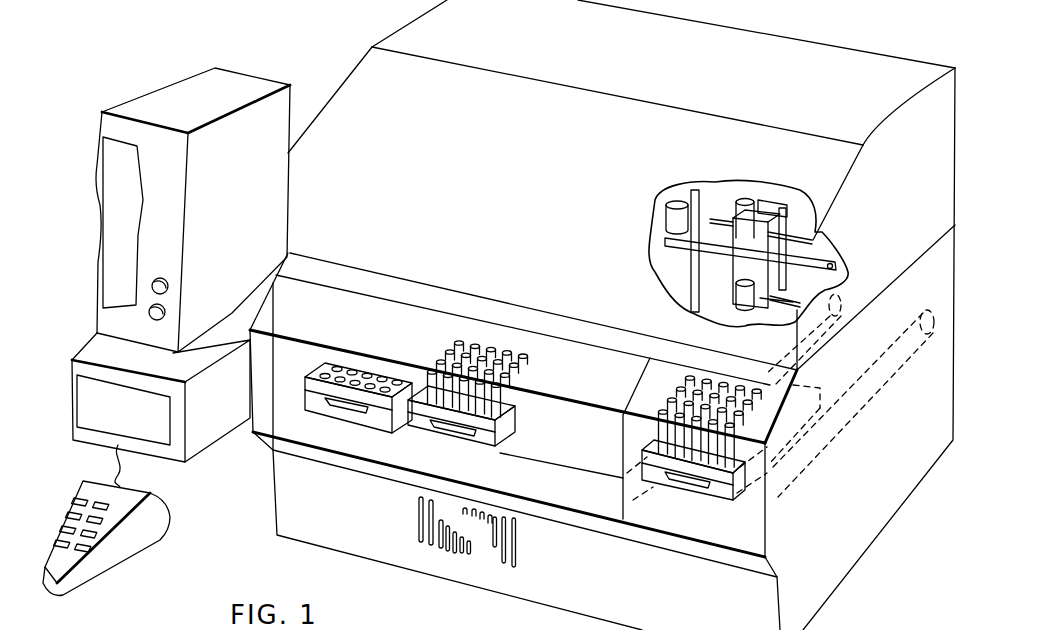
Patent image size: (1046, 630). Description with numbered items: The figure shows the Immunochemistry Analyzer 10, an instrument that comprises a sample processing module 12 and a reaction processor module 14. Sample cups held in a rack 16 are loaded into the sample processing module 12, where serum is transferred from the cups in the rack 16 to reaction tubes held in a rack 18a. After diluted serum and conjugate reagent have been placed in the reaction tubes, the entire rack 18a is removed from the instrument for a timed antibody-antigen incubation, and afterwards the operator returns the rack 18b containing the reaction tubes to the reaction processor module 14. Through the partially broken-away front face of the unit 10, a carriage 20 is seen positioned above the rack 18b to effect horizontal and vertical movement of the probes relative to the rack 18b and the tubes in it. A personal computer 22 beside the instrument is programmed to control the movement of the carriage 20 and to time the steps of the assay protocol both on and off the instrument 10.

The Immunochemistry Analyzer 10 is at (771, 45).
The sample processing module 12 is at (397, 334).
The reaction processor module 14 is at (660, 515).
The rack 16 is at (373, 415).
The rack 18a is at (467, 436).
The rack 18b is at (722, 494).
The carriage 20 is at (737, 272).
The personal computer 22 is at (261, 82).